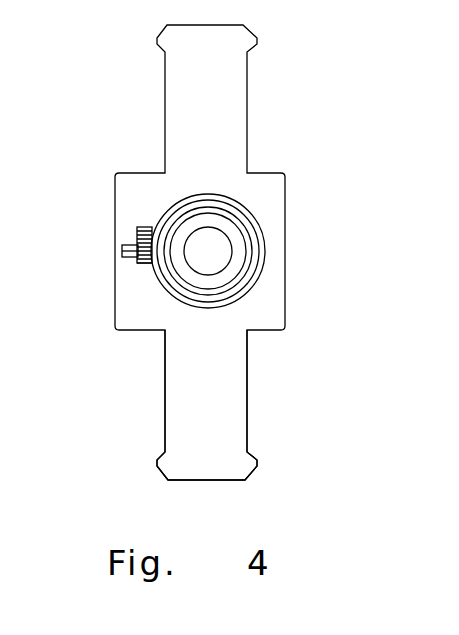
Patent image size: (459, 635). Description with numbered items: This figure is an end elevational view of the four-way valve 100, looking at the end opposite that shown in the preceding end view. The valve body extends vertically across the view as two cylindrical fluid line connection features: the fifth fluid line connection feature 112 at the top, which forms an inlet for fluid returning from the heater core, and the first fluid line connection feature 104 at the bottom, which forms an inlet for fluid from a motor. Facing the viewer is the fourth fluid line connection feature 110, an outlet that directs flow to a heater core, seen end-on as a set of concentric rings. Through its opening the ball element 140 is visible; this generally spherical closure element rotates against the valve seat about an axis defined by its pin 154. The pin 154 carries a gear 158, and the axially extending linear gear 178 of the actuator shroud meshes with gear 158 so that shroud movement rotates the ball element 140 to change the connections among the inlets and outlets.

The four-way valve 100 is at (134, 120).
The fifth fluid line connection feature 112 is at (243, 88).
The first fluid line connection feature 104 is at (237, 400).
The fourth fluid line connection feature 110 is at (243, 207).
The ball element 140 is at (208, 251).
The linear gear 178 is at (140, 228).
The pin 154 is at (123, 251).
The gear 158 is at (140, 264).